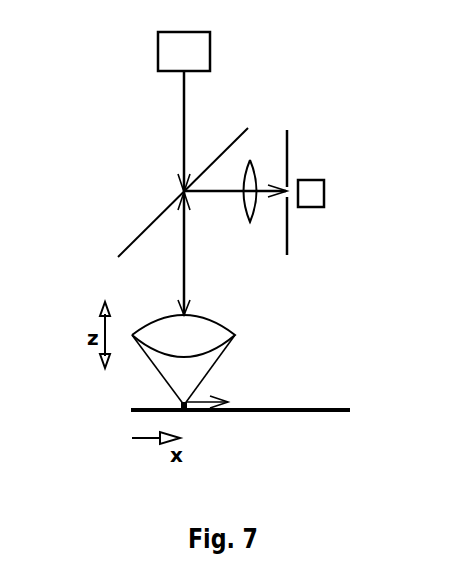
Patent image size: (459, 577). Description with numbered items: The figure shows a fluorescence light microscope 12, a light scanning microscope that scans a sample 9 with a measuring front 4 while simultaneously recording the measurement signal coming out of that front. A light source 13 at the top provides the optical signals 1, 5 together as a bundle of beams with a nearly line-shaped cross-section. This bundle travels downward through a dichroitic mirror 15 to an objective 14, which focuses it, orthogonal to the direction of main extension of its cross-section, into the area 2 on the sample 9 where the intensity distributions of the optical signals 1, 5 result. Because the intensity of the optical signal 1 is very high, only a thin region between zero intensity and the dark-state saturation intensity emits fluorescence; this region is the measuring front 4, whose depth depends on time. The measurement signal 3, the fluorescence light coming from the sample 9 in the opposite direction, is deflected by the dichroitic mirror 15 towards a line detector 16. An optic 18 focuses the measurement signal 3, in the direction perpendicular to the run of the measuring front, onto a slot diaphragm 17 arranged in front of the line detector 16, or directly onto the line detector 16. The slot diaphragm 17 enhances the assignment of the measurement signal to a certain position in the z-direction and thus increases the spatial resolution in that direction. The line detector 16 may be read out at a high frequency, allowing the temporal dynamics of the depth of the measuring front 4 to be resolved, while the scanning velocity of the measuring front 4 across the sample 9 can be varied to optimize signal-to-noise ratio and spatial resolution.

The optical signal 1 is at (148, 193).
The optical signal 5 is at (183, 122).
The area 2 is at (182, 404).
The measurement signal 3 is at (215, 195).
The measuring front 4 is at (194, 422).
The sample 9 is at (325, 408).
The fluorescence light microscope 12 is at (106, 138).
The light source 13 is at (212, 52).
The objective 14 is at (252, 332).
The dichroitic mirror 15 is at (233, 143).
The line detector 16 is at (340, 181).
The slot diaphragm 17 is at (288, 148).
The optic 18 is at (252, 222).